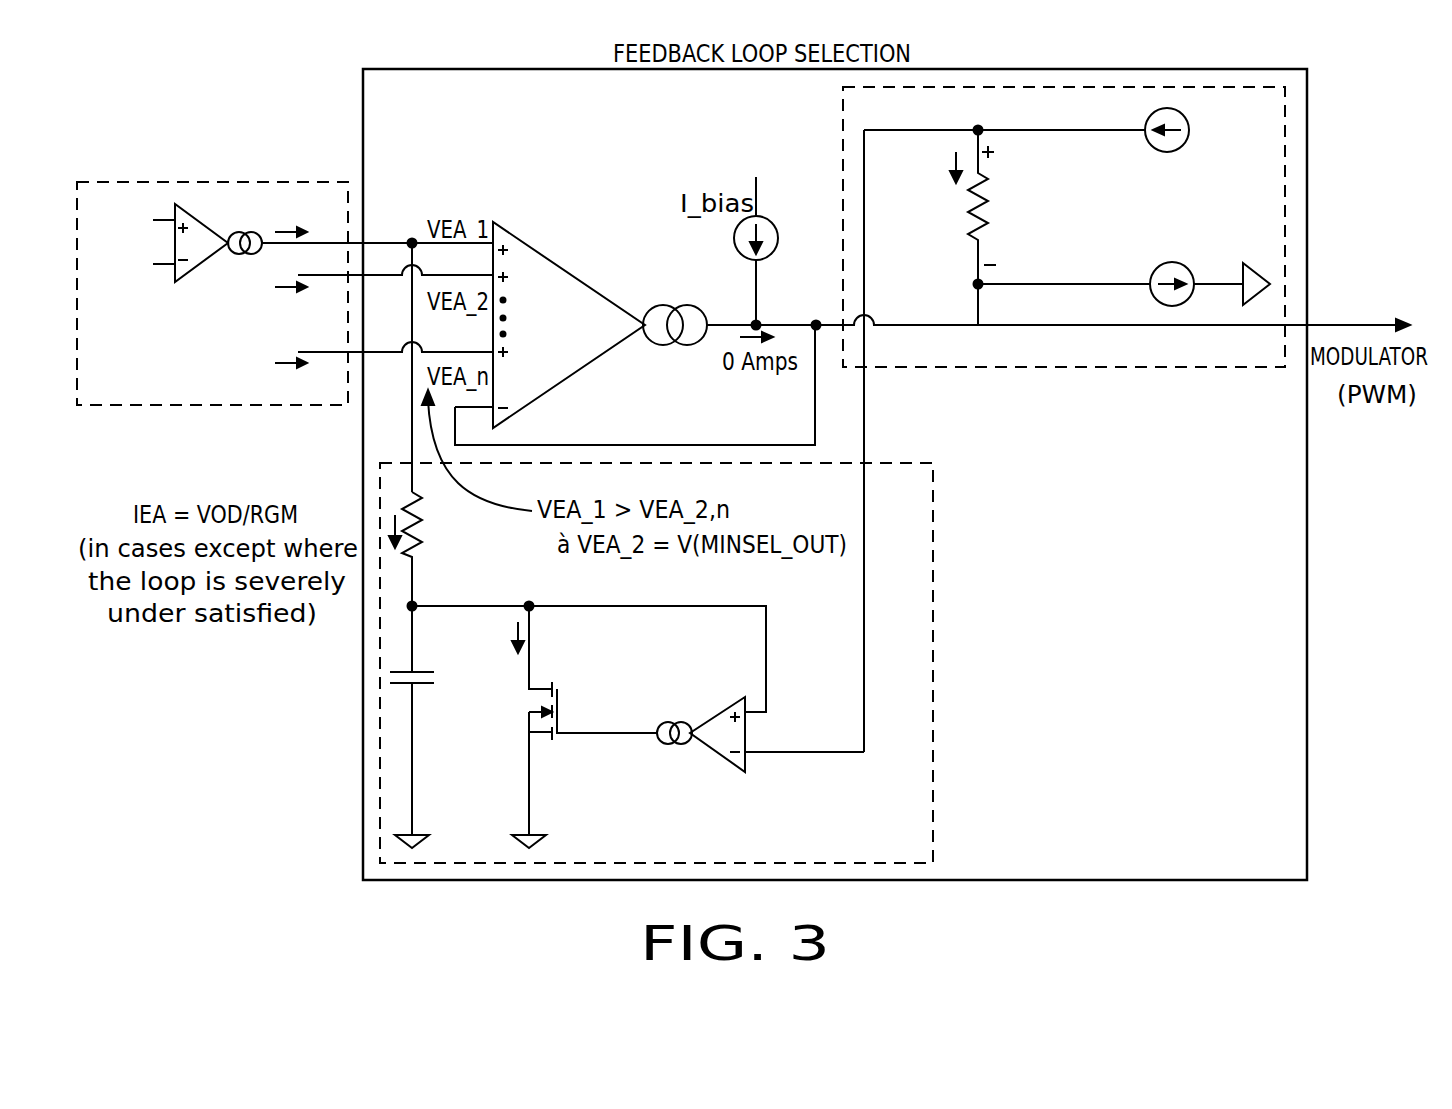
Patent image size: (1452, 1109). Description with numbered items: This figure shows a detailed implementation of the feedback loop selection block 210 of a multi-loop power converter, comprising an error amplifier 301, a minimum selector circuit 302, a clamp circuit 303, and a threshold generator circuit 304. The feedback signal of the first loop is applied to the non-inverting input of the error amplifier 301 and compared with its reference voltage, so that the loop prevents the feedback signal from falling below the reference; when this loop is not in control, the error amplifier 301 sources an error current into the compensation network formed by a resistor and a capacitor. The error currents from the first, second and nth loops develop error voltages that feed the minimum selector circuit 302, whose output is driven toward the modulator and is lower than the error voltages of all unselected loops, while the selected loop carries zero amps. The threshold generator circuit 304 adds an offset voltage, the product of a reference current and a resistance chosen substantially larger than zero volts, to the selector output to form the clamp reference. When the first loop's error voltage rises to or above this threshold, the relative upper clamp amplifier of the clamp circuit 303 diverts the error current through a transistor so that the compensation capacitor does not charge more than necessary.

The feedback loop selection block 210 is at (363, 128).
The error amplifier 301 is at (203, 263).
The minimum selector circuit 302 is at (612, 290).
The clamp circuit 303 is at (933, 602).
The threshold generator circuit 304 is at (1082, 367).